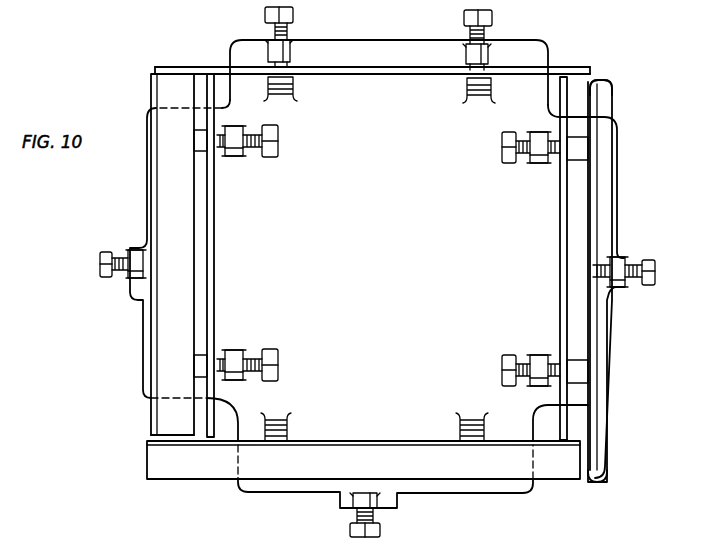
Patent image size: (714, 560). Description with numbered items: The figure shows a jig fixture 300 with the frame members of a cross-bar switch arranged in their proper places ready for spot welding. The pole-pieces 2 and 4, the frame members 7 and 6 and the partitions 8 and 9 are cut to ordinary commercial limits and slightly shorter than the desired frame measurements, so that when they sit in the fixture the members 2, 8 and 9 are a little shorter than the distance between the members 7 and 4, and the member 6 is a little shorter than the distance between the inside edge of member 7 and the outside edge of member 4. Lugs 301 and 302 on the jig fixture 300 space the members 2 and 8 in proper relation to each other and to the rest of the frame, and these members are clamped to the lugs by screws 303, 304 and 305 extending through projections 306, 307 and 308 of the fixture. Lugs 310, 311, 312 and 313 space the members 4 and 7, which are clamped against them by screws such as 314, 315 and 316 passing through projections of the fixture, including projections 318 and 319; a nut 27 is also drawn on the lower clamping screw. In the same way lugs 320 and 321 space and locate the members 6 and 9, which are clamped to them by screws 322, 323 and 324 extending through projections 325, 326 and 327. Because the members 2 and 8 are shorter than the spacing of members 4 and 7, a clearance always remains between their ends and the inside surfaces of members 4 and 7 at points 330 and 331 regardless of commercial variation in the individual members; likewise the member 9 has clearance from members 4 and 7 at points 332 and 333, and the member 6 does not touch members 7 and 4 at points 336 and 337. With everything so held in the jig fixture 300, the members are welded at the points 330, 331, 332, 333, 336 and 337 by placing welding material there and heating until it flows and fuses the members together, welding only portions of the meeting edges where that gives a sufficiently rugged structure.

The pole-piece 2 is at (150, 420).
The pole-piece 4 is at (383, 443).
The frame member 6 is at (590, 340).
The frame member 7 is at (400, 76).
The partition 8 is at (215, 293).
The partition 9 is at (557, 305).
The nut 27 is at (386, 497).
The jig fixture 300 is at (270, 493).
The lug 301 is at (205, 140).
The lug 302 is at (199, 360).
The screw 303 is at (100, 264).
The screw 304 is at (279, 141).
The screw 305 is at (279, 365).
The projection 306 is at (128, 287).
The projection 307 is at (233, 157).
The projection 308 is at (233, 380).
The lug 310 is at (288, 422).
The lug 311 is at (476, 414).
The lug 312 is at (294, 95).
The lug 313 is at (466, 97).
The screw 314 is at (368, 532).
The screw 315 is at (294, 16).
The screw 316 is at (493, 20).
The projection 318 is at (292, 50).
The projection 319 is at (489, 56).
The lug 320 is at (577, 150).
The lug 321 is at (573, 362).
The screw 322 is at (656, 271).
The screw 323 is at (501, 147).
The screw 324 is at (501, 370).
The projection 325 is at (617, 252).
The projection 326 is at (538, 163).
The projection 327 is at (537, 385).
The clearance point 330 is at (200, 443).
The clearance point 331 is at (178, 72).
The clearance point 332 is at (556, 443).
The clearance point 333 is at (583, 70).
The clearance point 336 is at (600, 78).
The clearance point 337 is at (603, 468).